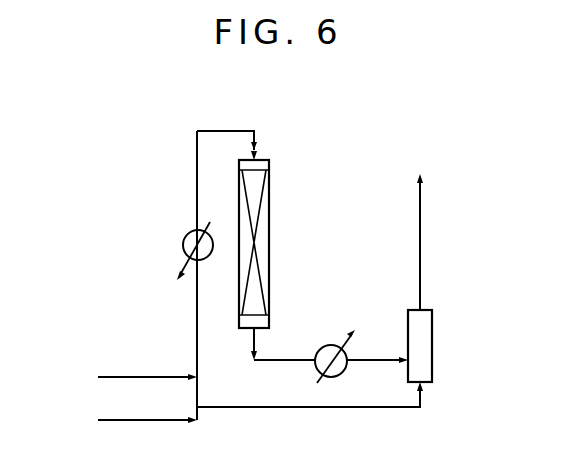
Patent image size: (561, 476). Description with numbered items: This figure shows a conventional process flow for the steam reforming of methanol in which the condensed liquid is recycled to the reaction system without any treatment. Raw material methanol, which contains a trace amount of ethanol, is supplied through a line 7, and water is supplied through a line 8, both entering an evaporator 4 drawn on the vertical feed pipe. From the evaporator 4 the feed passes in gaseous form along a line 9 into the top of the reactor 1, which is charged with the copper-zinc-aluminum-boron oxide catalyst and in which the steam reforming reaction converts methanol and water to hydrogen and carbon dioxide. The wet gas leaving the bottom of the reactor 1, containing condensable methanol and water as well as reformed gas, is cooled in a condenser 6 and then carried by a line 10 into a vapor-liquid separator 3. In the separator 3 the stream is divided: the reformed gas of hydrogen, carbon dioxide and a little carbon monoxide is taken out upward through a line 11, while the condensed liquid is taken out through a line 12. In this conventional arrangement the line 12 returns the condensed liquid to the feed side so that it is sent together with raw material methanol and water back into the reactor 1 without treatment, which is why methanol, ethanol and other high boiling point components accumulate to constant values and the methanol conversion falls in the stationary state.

The reactor 1 is at (270, 222).
The vapor-liquid separator 3 is at (432, 348).
The evaporator 4 is at (207, 258).
The condenser 6 is at (344, 372).
The line 7 is at (150, 377).
The line 8 is at (148, 420).
The line 9 is at (223, 131).
The line 10 is at (375, 360).
The line 11 is at (419, 258).
The line 12 is at (302, 407).